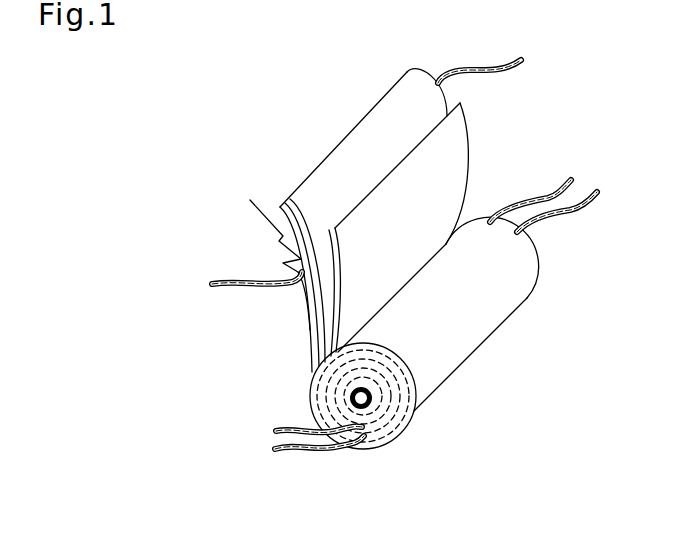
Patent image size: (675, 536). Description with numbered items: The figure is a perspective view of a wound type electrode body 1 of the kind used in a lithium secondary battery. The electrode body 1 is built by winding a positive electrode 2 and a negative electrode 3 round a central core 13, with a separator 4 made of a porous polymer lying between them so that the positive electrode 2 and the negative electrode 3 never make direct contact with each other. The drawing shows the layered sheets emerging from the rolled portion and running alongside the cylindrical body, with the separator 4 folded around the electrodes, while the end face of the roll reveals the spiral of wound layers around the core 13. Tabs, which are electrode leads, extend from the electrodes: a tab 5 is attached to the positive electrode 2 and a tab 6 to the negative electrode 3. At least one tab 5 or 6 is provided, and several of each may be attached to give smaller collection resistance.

The wound type electrode body 1 is at (493, 345).
The positive electrode 2 is at (306, 306).
The negative electrode 3 is at (352, 148).
The separator 4 is at (251, 199).
The tab 5 is at (223, 273).
The tab 6 is at (480, 73).
The core 13 is at (370, 404).